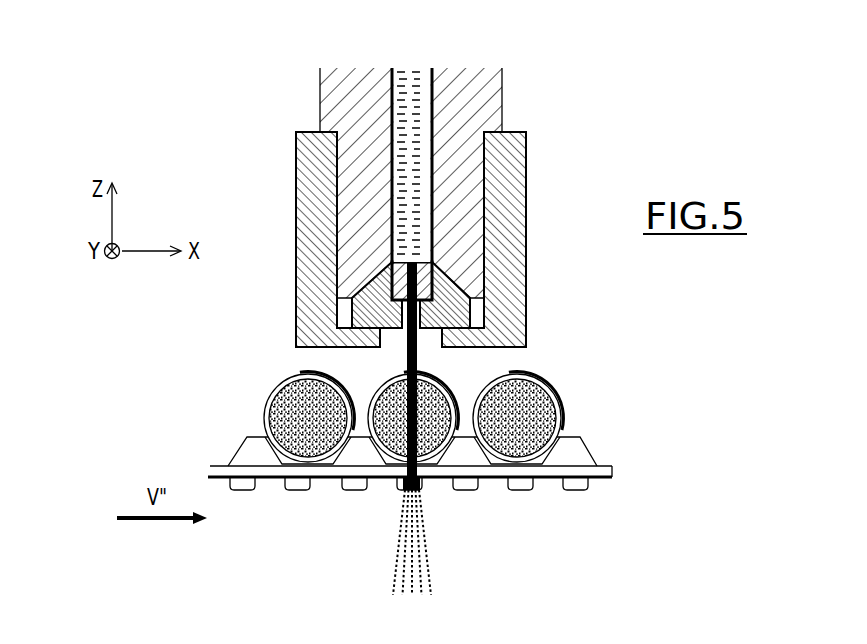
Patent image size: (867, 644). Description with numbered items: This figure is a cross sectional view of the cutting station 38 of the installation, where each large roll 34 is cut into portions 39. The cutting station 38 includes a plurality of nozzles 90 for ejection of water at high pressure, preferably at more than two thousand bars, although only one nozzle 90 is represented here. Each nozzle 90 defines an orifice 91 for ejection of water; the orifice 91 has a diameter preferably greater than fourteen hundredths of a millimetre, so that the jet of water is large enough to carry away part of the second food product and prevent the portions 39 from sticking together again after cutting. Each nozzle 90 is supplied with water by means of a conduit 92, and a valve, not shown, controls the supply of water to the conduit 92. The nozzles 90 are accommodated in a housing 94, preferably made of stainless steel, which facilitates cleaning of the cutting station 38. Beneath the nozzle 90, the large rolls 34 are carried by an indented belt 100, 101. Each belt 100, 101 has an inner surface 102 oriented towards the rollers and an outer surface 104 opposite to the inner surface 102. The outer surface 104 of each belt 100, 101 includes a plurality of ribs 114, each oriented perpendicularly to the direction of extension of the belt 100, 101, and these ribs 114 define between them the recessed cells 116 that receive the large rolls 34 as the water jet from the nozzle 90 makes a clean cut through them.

The cutting station 38 is at (541, 79).
The conduit 92 is at (420, 84).
The housing 94 is at (308, 192).
The nozzle 90 is at (461, 269).
The orifice 91 is at (433, 290).
The large roll 34 is at (276, 367).
The portion 39 is at (549, 368).
The recessed cell 116 is at (247, 418).
The rib 114 is at (580, 453).
The outer surface 104 is at (612, 462).
The inner surface 102 is at (547, 476).
The belt 100 is at (364, 451).
The belt 101 is at (196, 467).